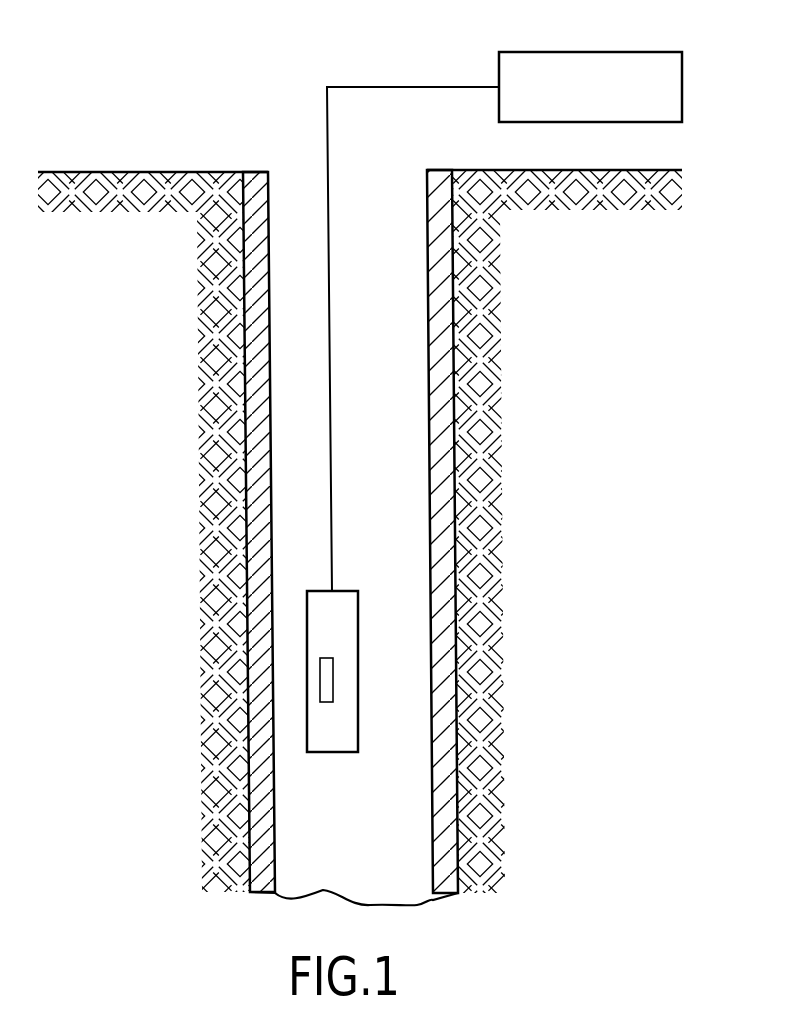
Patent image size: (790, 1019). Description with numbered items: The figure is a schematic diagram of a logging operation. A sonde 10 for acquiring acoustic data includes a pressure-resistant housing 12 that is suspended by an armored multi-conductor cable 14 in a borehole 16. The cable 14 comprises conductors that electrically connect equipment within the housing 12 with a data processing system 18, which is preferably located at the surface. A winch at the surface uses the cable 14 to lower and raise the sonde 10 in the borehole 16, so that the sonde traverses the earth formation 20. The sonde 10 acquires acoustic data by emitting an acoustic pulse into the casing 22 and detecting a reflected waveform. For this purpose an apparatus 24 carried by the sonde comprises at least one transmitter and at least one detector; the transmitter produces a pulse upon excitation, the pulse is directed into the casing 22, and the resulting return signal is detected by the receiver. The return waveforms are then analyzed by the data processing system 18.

The sonde 10 is at (323, 782).
The pressure-resistant housing 12 is at (350, 620).
The armored multi-conductor cable 14 is at (357, 87).
The borehole 16 is at (300, 172).
The data processing system 18 is at (617, 52).
The earth formation 20 is at (690, 238).
The casing 22 is at (270, 393).
The apparatus 24 is at (333, 686).